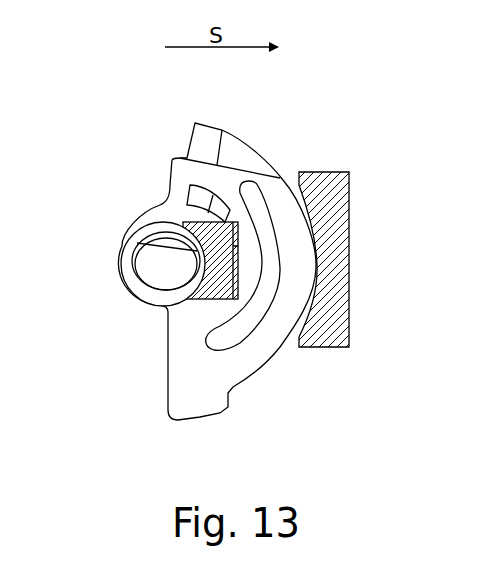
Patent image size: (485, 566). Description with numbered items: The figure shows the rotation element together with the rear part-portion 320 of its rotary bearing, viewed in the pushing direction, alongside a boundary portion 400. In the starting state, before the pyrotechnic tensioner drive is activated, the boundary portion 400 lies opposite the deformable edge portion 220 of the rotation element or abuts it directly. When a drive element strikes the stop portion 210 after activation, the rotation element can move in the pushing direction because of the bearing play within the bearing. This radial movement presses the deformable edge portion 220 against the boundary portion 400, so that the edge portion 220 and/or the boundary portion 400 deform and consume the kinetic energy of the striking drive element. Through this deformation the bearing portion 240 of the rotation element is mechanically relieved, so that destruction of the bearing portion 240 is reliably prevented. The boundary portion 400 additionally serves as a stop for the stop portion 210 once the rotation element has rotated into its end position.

The stop portion 210 is at (167, 379).
The deformable edge portion 220 is at (268, 335).
The bearing portion 240 is at (153, 263).
The rear part-portion 320 is at (183, 200).
The boundary portion 400 is at (349, 198).